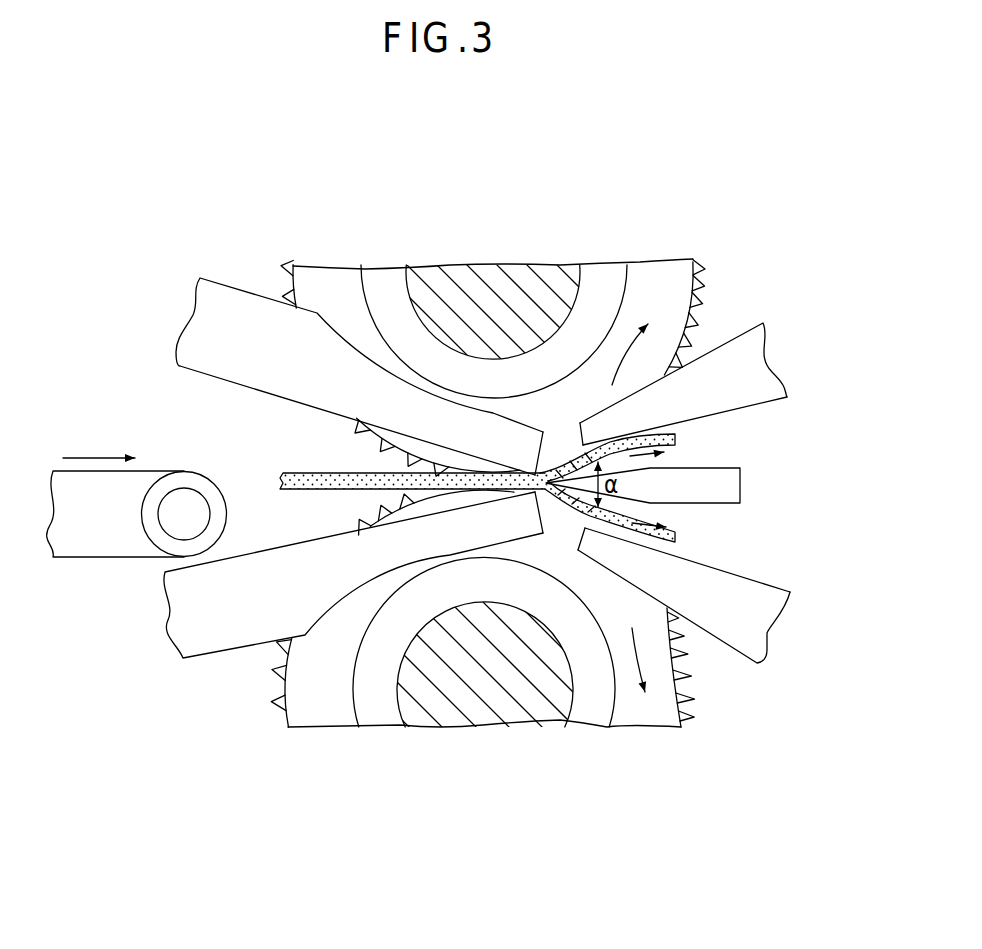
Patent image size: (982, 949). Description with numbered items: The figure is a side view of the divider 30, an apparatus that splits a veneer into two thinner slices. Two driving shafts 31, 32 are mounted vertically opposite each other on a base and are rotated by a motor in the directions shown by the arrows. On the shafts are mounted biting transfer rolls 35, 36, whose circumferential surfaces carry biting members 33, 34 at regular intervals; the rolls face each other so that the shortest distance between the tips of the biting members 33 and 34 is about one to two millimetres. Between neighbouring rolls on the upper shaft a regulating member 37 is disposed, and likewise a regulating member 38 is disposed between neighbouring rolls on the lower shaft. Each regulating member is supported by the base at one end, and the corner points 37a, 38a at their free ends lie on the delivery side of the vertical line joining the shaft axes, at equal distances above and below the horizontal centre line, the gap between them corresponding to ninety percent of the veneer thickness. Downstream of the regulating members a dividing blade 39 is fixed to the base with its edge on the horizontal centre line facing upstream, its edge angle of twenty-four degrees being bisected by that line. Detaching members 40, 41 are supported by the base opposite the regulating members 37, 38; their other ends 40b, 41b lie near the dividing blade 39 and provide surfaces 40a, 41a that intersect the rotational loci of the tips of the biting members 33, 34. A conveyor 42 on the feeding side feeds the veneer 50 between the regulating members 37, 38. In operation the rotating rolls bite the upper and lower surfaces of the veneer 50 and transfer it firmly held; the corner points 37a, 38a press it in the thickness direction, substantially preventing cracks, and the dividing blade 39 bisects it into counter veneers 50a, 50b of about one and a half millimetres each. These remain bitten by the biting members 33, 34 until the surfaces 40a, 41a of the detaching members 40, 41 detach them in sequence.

The divider 30 is at (742, 280).
The driving shaft 31 is at (477, 290).
The driving shaft 32 is at (458, 697).
The biting members 33 is at (672, 365).
The biting members 34 is at (692, 700).
The biting transfer roll 35 is at (648, 295).
The biting transfer roll 36 is at (643, 717).
The regulating member 37 is at (220, 292).
The corner point 37a is at (532, 470).
The regulating member 38 is at (203, 647).
The corner point 38a is at (531, 505).
The dividing blade 39 is at (727, 488).
The detaching member 40 is at (757, 353).
The surface 40a is at (733, 412).
The other end 40b is at (578, 430).
The detaching member 41 is at (755, 628).
The surface 41a is at (730, 569).
The other end 41b is at (577, 548).
The conveyor 42 is at (93, 535).
The veneer 50 is at (285, 473).
The counter veneer 50a is at (678, 442).
The counter veneer 50b is at (677, 538).